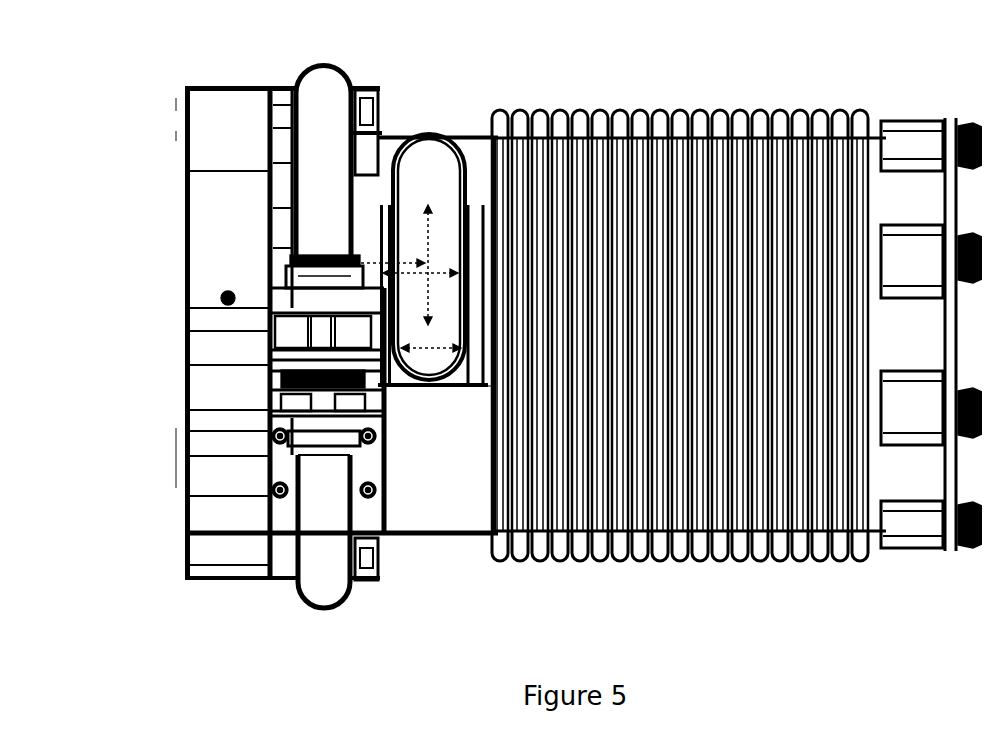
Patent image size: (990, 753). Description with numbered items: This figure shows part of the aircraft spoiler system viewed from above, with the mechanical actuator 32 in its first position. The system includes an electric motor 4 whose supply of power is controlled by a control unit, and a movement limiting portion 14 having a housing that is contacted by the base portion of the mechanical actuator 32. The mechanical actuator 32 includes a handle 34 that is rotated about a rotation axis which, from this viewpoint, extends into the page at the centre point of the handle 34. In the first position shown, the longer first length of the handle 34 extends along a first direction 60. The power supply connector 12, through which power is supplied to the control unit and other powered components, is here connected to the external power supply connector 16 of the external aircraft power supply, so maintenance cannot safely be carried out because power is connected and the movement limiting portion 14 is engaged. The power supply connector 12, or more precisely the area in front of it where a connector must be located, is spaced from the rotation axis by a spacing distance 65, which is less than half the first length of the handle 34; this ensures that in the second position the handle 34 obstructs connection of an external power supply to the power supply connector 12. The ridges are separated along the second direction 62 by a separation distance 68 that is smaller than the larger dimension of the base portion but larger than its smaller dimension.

The motor 4 is at (700, 120).
The power supply connector 12 is at (298, 478).
The movement limiting portion 14 is at (424, 429).
The external power supply connector 16 is at (298, 182).
The mechanical actuator 32 is at (428, 113).
The handle 34 is at (418, 158).
The first direction 60 is at (420, 233).
The second direction 62 is at (420, 343).
The spacing distance 65 is at (345, 260).
The separation distance 68 is at (428, 262).